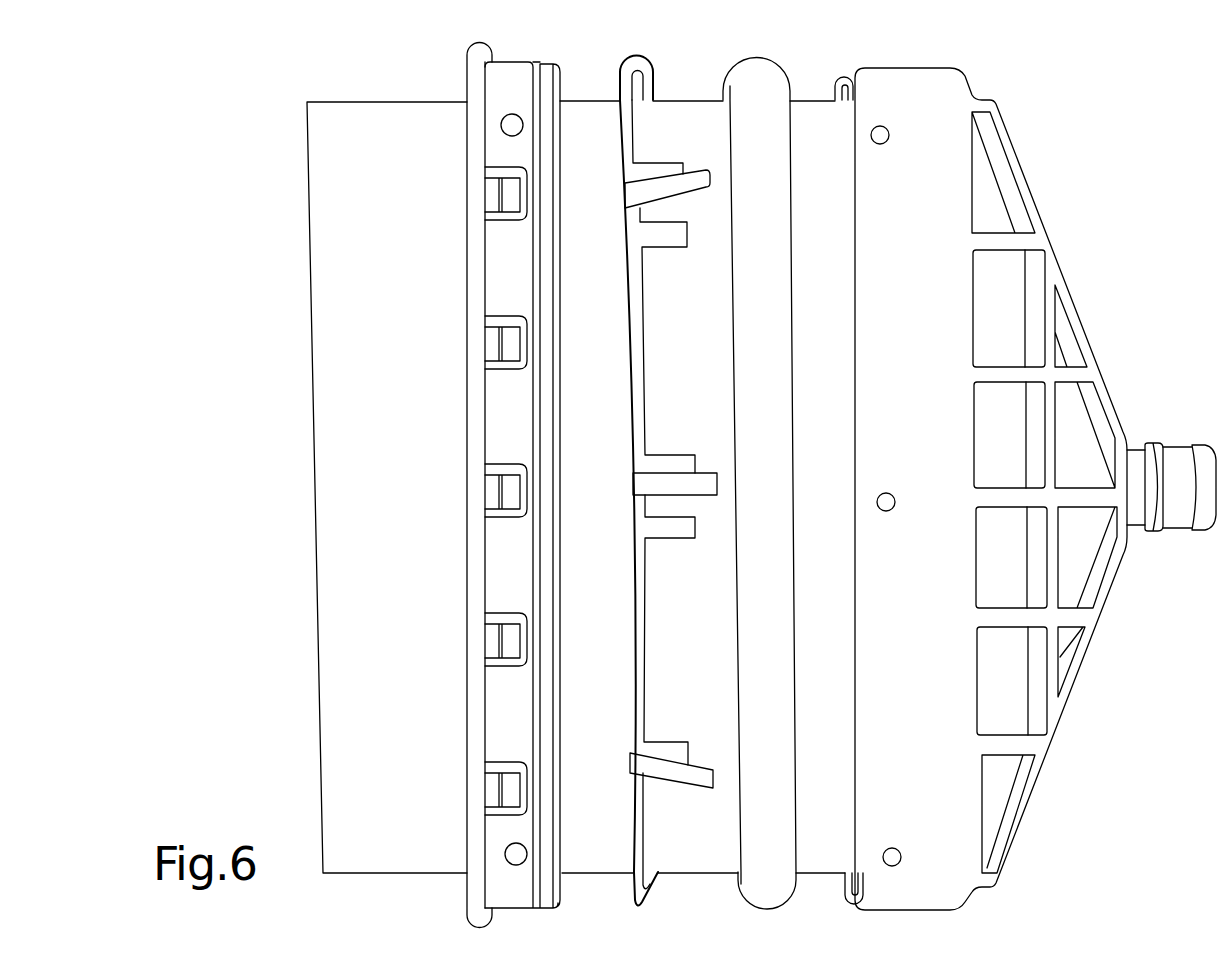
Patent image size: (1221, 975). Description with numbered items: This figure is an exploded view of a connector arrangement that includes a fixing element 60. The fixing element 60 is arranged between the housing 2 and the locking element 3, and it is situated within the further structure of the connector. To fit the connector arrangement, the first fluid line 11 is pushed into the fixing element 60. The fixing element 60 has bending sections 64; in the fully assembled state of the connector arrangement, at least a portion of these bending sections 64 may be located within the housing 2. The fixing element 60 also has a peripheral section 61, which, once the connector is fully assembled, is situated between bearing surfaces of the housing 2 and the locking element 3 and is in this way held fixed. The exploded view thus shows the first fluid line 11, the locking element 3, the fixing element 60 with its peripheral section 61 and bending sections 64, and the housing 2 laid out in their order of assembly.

The housing 2 is at (918, 145).
The locking element 3 is at (510, 73).
The first fluid line 11 is at (403, 178).
The fixing element 60 is at (623, 458).
The peripheral section 61 is at (623, 458).
The bending sections 64 is at (672, 170).